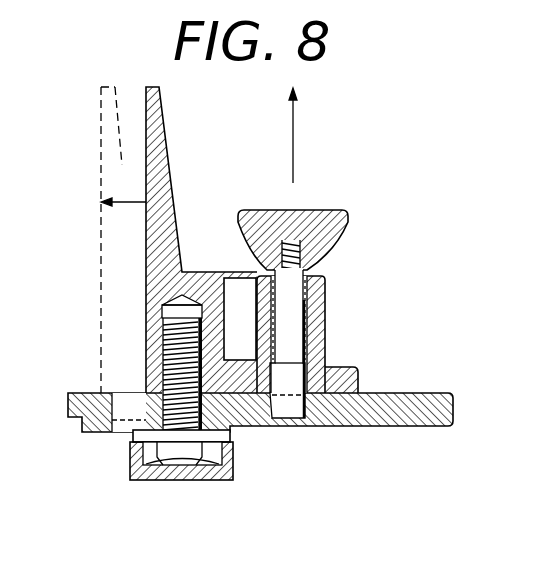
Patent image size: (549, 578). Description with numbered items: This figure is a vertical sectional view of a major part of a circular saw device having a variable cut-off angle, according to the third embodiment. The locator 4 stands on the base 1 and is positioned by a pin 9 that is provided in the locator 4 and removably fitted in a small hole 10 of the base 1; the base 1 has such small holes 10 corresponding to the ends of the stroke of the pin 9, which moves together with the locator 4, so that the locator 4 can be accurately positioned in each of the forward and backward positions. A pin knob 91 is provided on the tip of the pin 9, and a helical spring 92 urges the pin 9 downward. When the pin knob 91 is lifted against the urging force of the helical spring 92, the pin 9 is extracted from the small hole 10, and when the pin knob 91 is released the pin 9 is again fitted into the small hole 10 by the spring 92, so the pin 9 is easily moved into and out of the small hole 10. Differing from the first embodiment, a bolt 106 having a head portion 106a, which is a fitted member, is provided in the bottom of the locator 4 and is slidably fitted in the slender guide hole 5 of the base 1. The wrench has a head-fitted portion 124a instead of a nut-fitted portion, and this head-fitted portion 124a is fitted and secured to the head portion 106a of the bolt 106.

The base 1 is at (393, 423).
The locator 4 is at (160, 148).
The slender guide hole 5 is at (127, 405).
The pin 9 is at (358, 380).
The small hole 10 is at (242, 422).
The pin knob 91 is at (345, 228).
The helical spring 92 is at (325, 303).
The bolt 106 is at (170, 333).
The head portion 106a is at (211, 452).
The head-fitted portion 124a is at (130, 458).